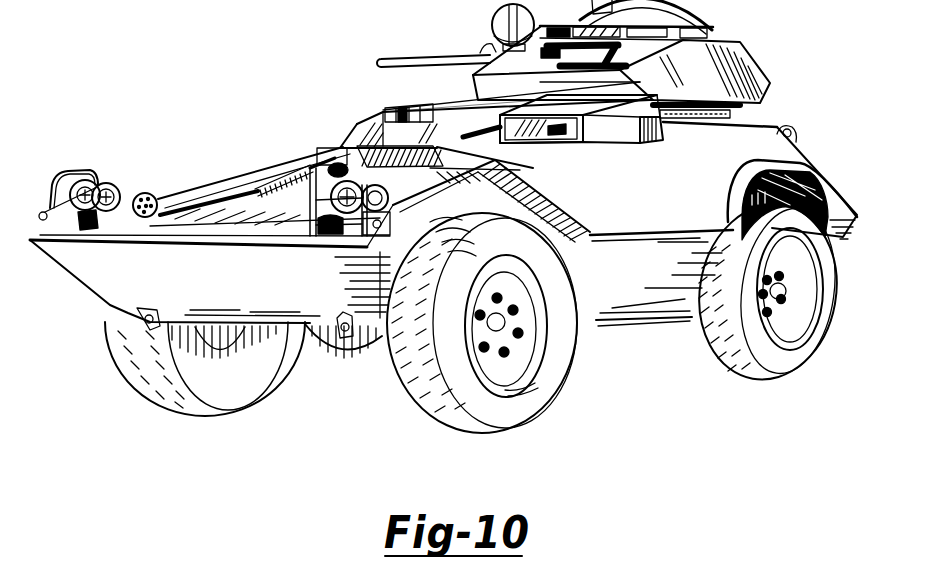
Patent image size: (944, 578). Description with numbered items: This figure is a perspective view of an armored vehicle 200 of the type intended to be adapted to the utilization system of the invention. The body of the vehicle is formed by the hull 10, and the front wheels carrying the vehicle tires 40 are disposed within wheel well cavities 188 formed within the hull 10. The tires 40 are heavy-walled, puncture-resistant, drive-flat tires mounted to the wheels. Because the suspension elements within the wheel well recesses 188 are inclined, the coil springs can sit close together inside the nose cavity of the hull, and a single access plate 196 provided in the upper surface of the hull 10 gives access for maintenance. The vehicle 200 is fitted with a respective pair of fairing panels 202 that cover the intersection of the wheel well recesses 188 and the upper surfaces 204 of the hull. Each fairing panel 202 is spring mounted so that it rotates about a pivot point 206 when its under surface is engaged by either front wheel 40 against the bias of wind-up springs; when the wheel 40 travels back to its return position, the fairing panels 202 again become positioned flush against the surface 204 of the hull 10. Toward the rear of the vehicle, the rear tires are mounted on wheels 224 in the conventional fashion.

The hull 10 is at (307, 345).
The vehicle tires 40 is at (230, 410).
The wheel well cavities 188 is at (563, 215).
The access plate 196 is at (183, 200).
The vehicle 200 is at (368, 114).
The fairing panels 202 is at (203, 178).
The upper surfaces of the hull 204 is at (290, 192).
The pivot point 206 is at (259, 168).
The wheels 224 is at (742, 380).